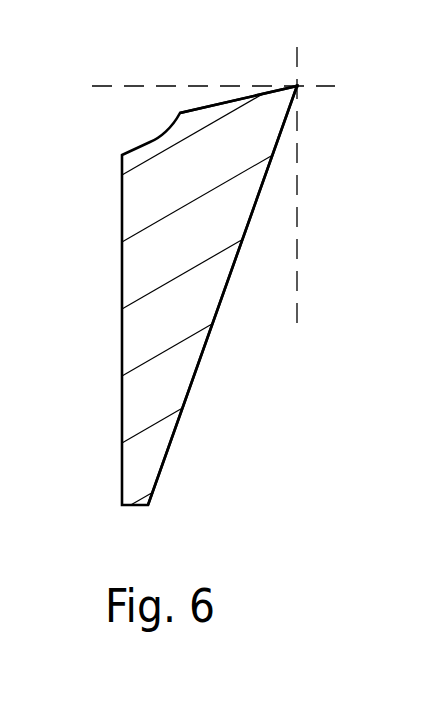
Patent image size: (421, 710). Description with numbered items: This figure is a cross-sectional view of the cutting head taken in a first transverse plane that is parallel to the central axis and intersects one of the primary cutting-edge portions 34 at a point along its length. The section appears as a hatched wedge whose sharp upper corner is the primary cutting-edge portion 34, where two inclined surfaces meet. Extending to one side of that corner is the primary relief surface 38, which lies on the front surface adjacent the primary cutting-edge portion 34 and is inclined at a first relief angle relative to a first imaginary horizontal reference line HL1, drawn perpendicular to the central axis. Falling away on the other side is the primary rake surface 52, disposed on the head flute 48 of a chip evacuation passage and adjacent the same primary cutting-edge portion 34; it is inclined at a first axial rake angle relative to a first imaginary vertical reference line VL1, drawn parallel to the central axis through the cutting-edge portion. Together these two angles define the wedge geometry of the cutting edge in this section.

The primary cutting-edge portion 34 is at (299, 83).
The primary relief surface 38 is at (233, 102).
The head flute 48 is at (233, 297).
The primary rake surface 52 is at (278, 141).
The first imaginary horizontal reference line HL1 is at (212, 86).
The first imaginary vertical reference line VL1 is at (300, 190).